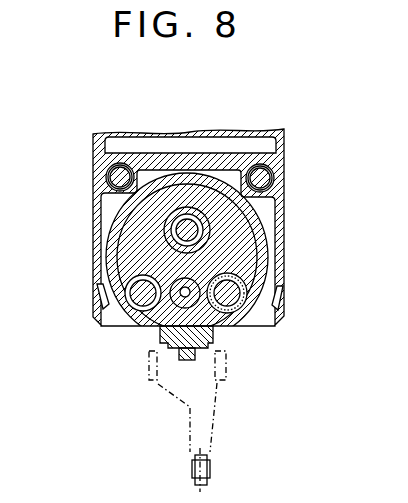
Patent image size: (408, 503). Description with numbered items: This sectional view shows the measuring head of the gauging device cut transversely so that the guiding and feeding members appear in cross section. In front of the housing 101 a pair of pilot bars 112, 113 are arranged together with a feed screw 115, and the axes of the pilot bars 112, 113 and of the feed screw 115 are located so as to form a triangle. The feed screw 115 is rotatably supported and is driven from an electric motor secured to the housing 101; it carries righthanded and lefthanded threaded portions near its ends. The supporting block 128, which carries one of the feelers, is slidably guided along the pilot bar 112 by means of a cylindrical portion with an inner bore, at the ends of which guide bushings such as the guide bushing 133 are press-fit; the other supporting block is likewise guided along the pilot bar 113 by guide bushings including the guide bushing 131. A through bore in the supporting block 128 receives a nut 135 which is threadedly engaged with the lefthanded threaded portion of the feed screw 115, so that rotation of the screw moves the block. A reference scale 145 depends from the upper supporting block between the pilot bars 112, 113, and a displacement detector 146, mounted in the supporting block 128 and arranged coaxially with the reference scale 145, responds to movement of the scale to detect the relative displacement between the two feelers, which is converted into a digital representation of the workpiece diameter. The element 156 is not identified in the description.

The housing 101 is at (287, 163).
The pilot bar 112 is at (132, 293).
The pilot bar 113 is at (247, 293).
The feed screw 115 is at (198, 235).
The supporting block 128 is at (228, 332).
The guide bushing 131 is at (245, 301).
The guide bushing 133 is at (128, 306).
The nut 135 is at (203, 220).
The reference scale 145 is at (183, 294).
The displacement detector 146 is at (176, 282).
The fitting 156 is at (211, 469).